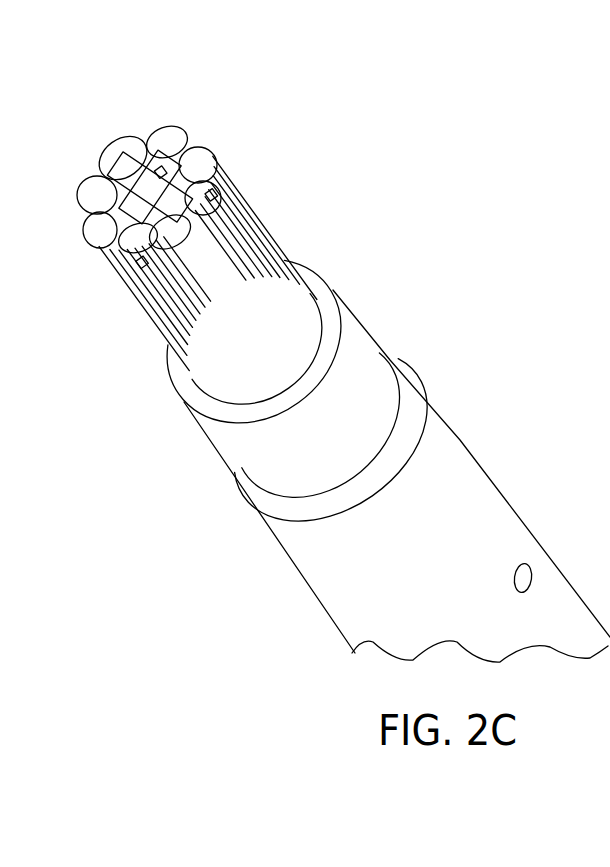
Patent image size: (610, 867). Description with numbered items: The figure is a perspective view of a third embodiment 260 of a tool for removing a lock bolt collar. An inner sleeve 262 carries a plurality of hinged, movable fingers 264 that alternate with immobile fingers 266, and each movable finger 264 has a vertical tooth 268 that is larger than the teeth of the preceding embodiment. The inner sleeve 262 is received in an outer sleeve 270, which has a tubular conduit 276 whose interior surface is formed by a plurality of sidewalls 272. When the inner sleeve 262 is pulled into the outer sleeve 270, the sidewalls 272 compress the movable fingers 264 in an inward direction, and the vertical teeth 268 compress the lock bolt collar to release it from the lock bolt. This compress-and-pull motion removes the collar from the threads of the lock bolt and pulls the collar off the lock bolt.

The third embodiment of the apparatus 260 is at (387, 132).
The inner sleeve 262 is at (260, 215).
The movable fingers 264 is at (160, 172).
The immobile fingers 266 is at (116, 135).
The vertical tooth 268 is at (123, 195).
The outer sleeve 270 is at (366, 352).
The sidewalls 272 is at (321, 334).
The tubular conduit 276 is at (314, 277).